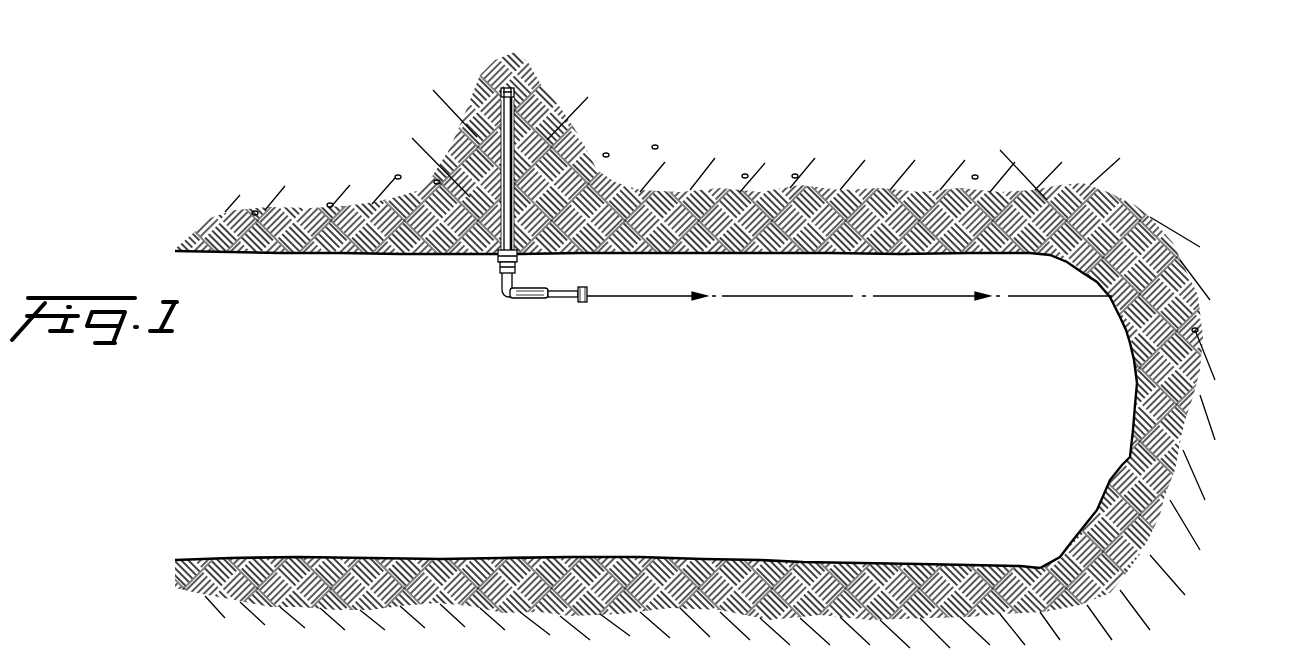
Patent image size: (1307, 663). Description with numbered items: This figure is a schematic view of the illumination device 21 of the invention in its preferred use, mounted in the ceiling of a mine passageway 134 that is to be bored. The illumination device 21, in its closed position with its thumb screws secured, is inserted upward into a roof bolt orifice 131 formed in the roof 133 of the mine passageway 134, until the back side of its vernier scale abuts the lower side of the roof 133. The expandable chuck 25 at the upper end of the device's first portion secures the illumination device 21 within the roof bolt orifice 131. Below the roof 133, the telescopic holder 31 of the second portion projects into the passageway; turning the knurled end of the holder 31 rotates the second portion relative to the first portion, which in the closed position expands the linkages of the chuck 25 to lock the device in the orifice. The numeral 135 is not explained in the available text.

The illumination device 21 is at (500, 155).
The expandable chuck 25 is at (517, 91).
The telescopic holder 31 is at (530, 300).
The roof bolt orifice 131 is at (513, 167).
The roof 133 is at (687, 175).
The mine passageway 134 is at (343, 255).
The tunnel face 135 is at (1113, 300).